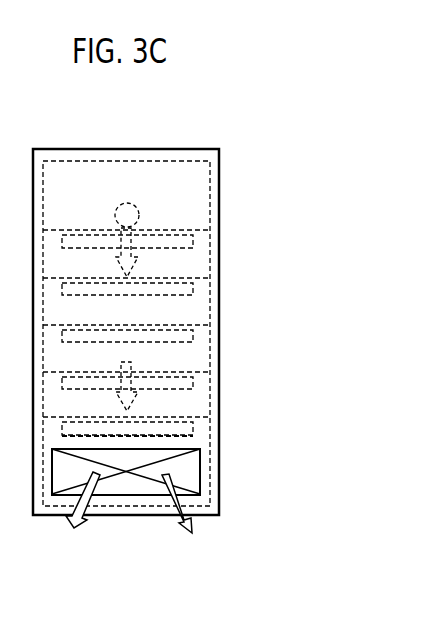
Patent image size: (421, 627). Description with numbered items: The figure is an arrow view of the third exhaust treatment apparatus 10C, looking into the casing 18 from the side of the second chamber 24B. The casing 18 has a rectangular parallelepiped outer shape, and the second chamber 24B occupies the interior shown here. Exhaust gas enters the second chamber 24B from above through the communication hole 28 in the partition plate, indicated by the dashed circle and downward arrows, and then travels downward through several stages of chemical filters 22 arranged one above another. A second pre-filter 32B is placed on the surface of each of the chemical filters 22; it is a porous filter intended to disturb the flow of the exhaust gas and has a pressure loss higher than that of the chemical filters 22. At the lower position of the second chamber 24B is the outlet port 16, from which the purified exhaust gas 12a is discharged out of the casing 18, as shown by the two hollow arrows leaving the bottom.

The third exhaust treatment apparatus 10C is at (52, 122).
The casing 18 is at (148, 148).
The second chamber 24B is at (193, 203).
The second pre-filter 32B is at (197, 232).
The chemical filter 22 is at (185, 244).
The communication hole 28 is at (124, 204).
The outlet port 16 is at (127, 485).
The purified exhaust gas 12a is at (77, 529).